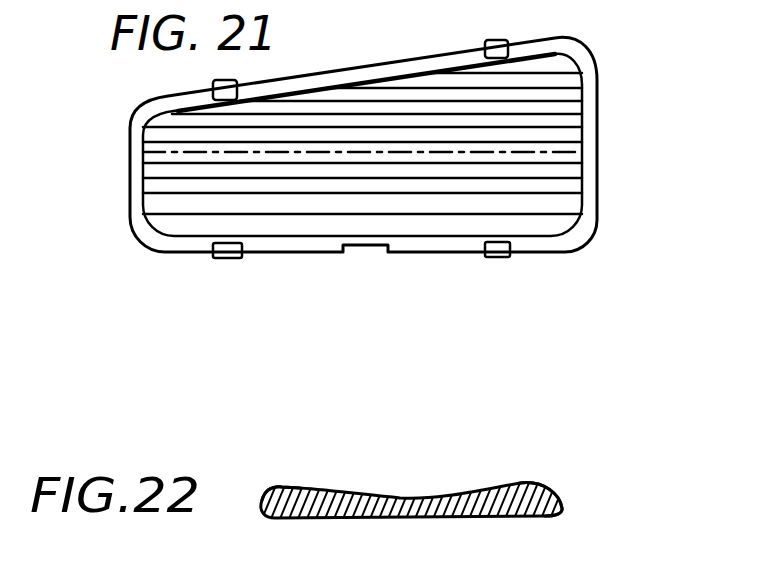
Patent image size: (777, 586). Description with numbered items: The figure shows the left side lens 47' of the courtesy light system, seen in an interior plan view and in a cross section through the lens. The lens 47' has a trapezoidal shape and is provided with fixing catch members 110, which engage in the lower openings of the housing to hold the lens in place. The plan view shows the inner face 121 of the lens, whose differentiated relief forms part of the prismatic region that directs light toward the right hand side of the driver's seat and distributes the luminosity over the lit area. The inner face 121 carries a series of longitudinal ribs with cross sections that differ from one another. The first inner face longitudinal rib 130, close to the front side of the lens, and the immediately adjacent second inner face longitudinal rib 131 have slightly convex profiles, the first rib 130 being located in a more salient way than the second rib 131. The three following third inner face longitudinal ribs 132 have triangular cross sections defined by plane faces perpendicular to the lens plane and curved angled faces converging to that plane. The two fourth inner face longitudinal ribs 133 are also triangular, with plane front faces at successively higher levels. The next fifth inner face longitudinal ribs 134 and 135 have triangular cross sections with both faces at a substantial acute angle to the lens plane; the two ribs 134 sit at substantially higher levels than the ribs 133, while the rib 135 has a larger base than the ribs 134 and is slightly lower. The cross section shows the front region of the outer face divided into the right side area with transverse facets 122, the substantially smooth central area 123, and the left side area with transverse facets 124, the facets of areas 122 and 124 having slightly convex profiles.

In FIG. 21, the left side lens 47' is at (406, 144).
In FIG. 21, the fixing catch members 110 is at (217, 88).
In FIG. 21, the inner face 121 is at (564, 223).
In FIG. 21, the first inner face longitudinal rib 130 is at (360, 176).
In FIG. 21, the second inner face longitudinal rib 131 is at (148, 206).
In FIG. 21, the third inner face longitudinal ribs 132 is at (150, 185).
In FIG. 21, the fourth inner face longitudinal ribs 133 is at (155, 133).
In FIG. 21, the fifth inner face longitudinal ribs 134 is at (572, 108).
In FIG. 21, the fifth inner face longitudinal rib 135 is at (572, 80).
In FIG. 22, the right side area with transverse facets 122 is at (288, 518).
In FIG. 22, the substantially smooth central area 123 is at (412, 516).
In FIG. 22, the left side area with transverse facets 124 is at (535, 515).